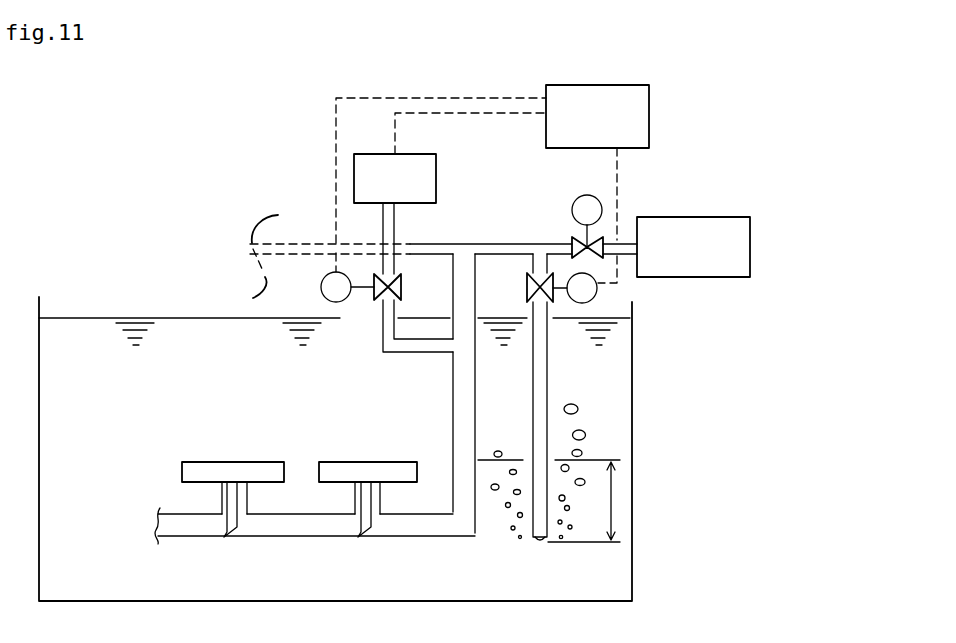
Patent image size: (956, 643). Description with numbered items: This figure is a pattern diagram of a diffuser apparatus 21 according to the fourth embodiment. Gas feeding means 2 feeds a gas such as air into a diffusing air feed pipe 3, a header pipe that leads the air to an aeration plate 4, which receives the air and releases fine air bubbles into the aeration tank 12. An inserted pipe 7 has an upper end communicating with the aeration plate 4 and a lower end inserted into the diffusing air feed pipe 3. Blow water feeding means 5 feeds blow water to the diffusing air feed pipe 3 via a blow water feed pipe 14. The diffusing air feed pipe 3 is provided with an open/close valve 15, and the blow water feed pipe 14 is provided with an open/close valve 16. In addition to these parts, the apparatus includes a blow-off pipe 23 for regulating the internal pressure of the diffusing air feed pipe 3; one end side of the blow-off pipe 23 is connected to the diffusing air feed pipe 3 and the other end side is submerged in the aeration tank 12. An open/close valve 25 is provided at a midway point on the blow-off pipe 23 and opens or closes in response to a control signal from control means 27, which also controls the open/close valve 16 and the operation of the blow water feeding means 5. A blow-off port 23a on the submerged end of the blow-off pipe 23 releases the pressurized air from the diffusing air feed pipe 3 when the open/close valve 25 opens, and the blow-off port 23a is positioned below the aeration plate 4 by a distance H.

The gas feeding means 2 is at (729, 217).
The diffusing air feed pipe 3 is at (475, 415).
The aeration plate 4 is at (268, 462).
The blow water feeding means 5 is at (418, 154).
The inserted pipe 7 is at (226, 538).
The aeration tank 12 is at (632, 395).
The blow water feed pipe 14 is at (396, 225).
The open/close valve 15 is at (572, 210).
The open/close valve 16 is at (321, 287).
The diffuser apparatus 21 is at (164, 191).
The blow-off pipe 23 is at (547, 373).
The blow-off port 23a is at (540, 540).
The open/close valve 25 is at (597, 290).
The control means 27 is at (546, 138).
The distance H is at (554, 501).